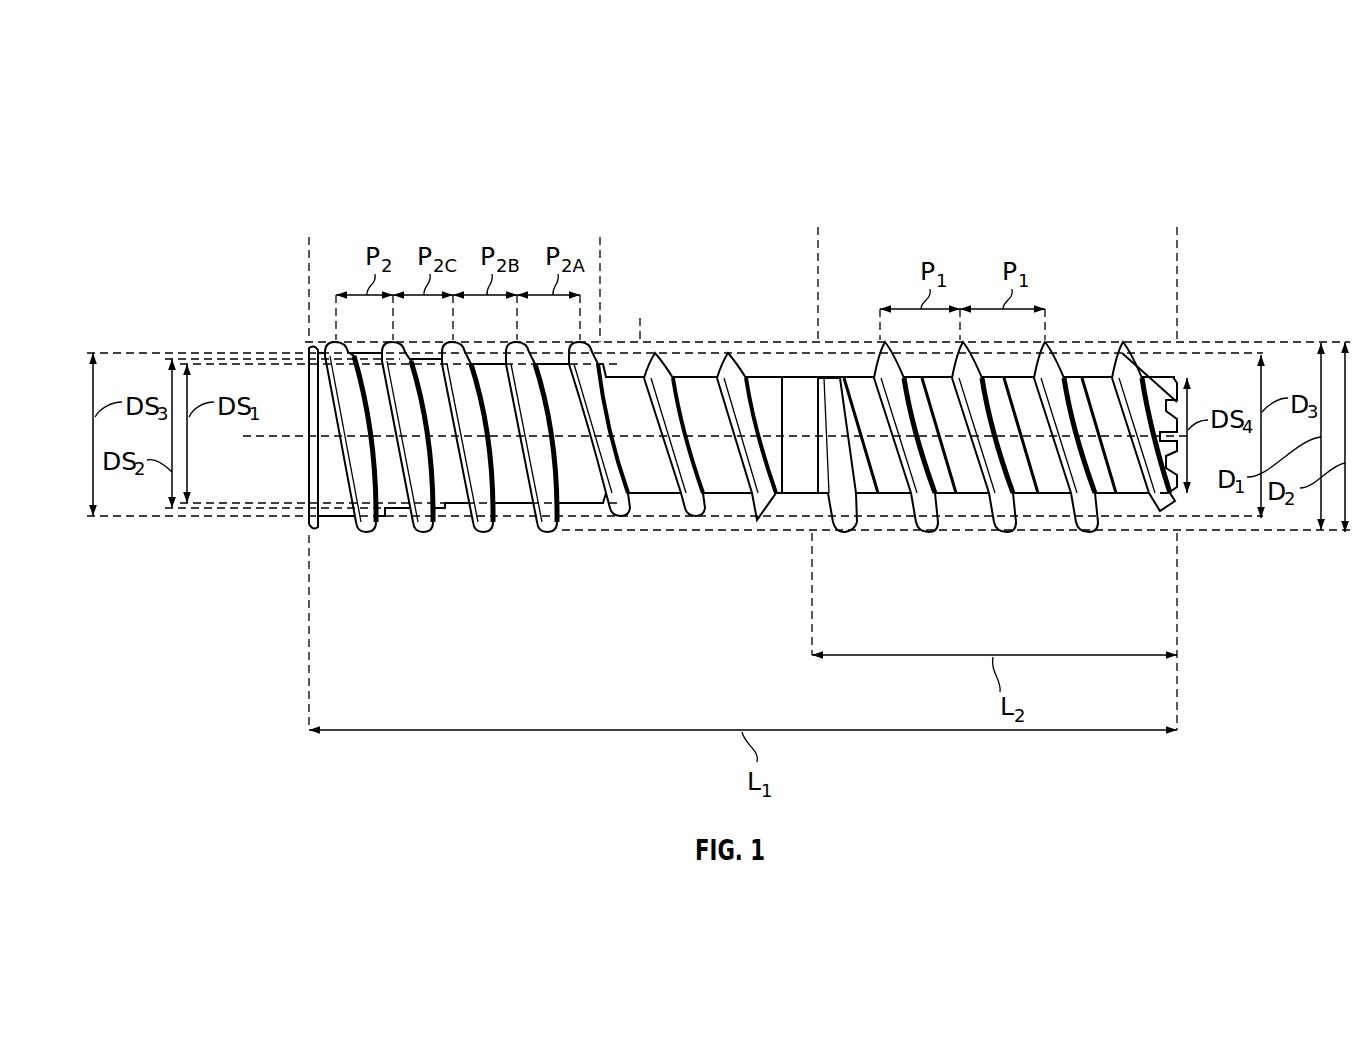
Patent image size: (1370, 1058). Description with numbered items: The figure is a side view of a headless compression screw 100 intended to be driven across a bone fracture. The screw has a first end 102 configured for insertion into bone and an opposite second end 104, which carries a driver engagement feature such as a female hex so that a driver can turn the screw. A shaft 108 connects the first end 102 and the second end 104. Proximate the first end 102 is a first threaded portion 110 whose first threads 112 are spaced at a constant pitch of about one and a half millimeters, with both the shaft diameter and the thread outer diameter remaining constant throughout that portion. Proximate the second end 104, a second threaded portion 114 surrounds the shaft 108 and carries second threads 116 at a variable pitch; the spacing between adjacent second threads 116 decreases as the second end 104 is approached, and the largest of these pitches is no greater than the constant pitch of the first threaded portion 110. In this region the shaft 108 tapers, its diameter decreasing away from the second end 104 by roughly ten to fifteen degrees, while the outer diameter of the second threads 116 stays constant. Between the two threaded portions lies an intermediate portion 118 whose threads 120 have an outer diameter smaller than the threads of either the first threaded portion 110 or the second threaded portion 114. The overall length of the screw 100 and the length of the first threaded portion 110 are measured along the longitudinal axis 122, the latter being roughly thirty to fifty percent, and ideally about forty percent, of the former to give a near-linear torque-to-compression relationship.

The headless compression screw 100 is at (171, 133).
The first end 102 is at (1165, 372).
The second end 104 is at (309, 350).
The shaft 108 is at (740, 507).
The first threaded portion 110 is at (818, 227).
The first threads 112 is at (1055, 345).
The second threaded portion 114 is at (308, 237).
The second threads 116 is at (481, 533).
The intermediate portion 118 is at (640, 318).
The threads of the intermediate portion 120 is at (690, 518).
The longitudinal axis 122 is at (263, 438).